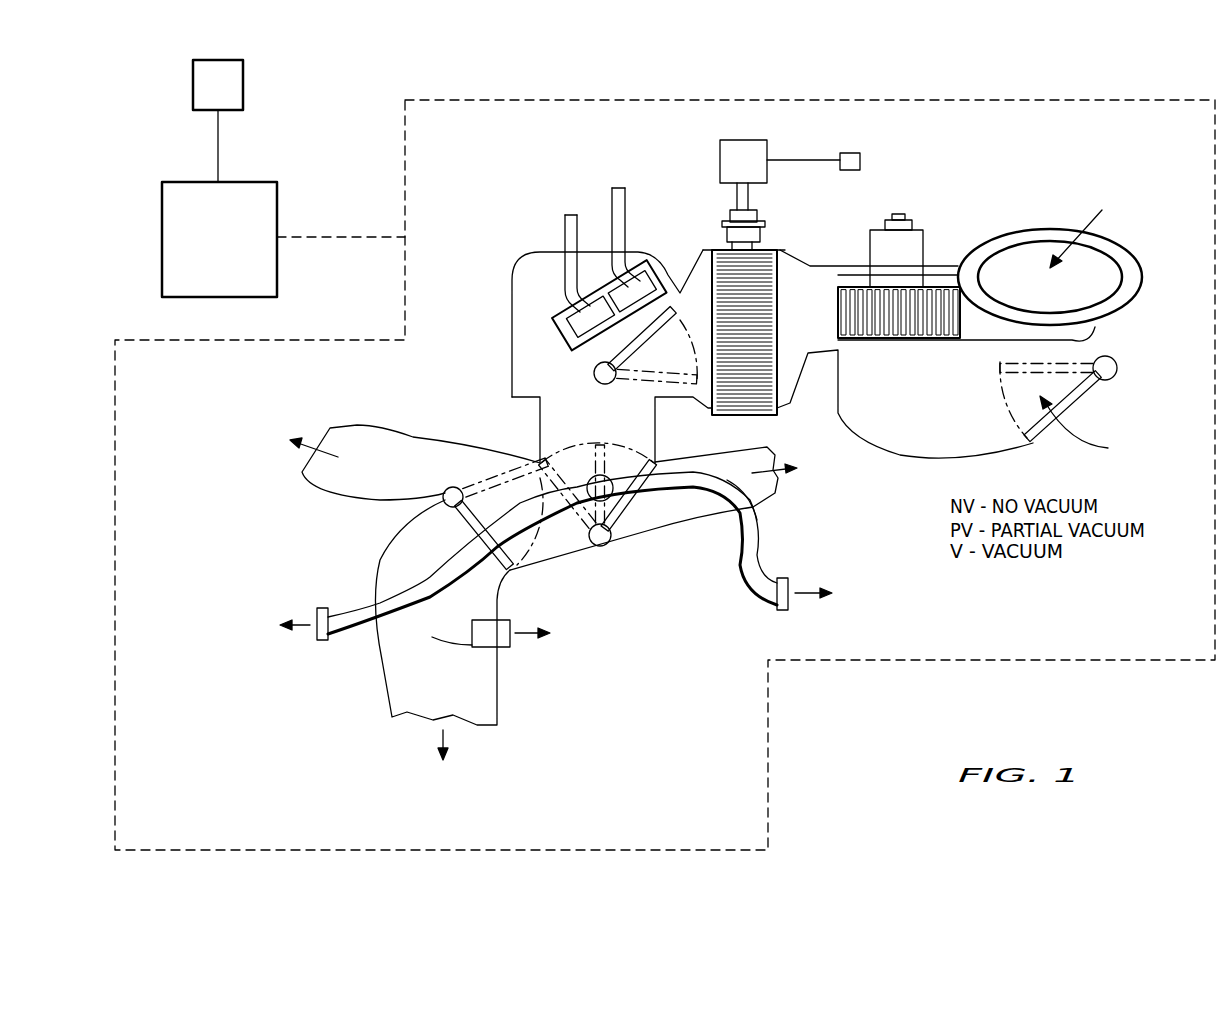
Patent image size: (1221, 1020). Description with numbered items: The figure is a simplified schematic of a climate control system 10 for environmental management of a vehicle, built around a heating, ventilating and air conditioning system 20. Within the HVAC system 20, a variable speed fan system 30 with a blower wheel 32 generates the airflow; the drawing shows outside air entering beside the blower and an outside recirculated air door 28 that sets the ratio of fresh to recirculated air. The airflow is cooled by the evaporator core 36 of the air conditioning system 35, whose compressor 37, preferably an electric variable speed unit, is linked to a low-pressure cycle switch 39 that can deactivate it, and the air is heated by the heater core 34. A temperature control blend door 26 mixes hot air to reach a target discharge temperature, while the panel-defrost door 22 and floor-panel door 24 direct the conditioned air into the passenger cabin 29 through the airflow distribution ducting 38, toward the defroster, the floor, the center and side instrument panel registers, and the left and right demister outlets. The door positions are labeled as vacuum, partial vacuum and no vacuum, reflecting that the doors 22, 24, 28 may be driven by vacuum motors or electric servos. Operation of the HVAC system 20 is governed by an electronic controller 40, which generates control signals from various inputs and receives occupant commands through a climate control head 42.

The climate control system 10 is at (363, 100).
The heating, ventilating and air conditioning (HVAC) system 20 is at (958, 218).
The panel-defrost door 22 is at (467, 533).
The floor-panel door 24 is at (620, 503).
The temperature control blend door 26 is at (622, 350).
The outside recirculated air door 28 is at (1085, 393).
The passenger cabin 29 is at (259, 750).
The variable speed fan system 30 is at (878, 254).
The blower wheel 32 is at (838, 300).
The heater core 34 is at (560, 337).
The air conditioning (A/C) system 35 is at (754, 186).
The evaporator core 36 is at (728, 262).
The compressor 37 is at (720, 165).
The ducting 38 is at (760, 493).
The low-pressure cycle switch 39 is at (860, 160).
The electronic controller 40 is at (177, 181).
The climate control head 42 is at (230, 95).